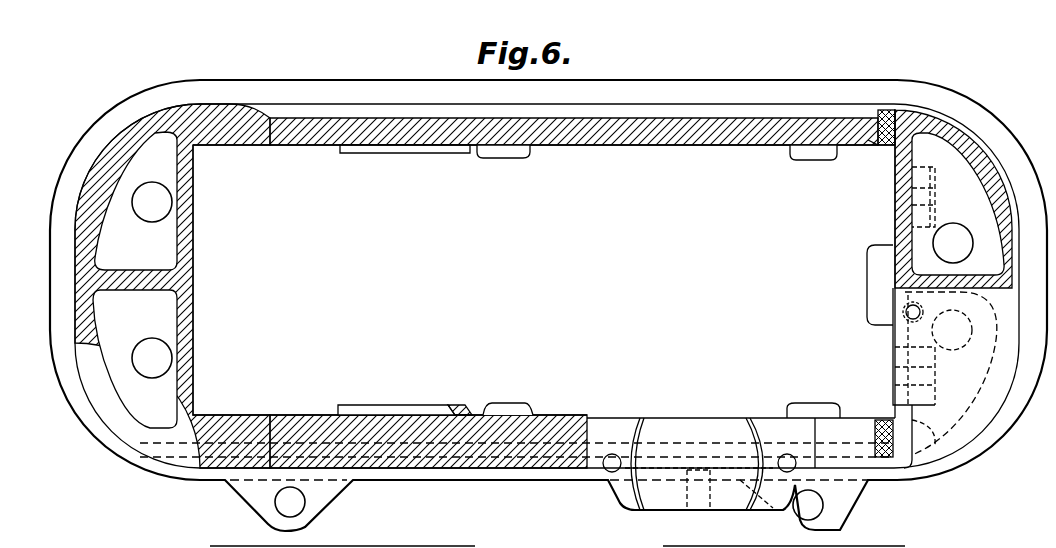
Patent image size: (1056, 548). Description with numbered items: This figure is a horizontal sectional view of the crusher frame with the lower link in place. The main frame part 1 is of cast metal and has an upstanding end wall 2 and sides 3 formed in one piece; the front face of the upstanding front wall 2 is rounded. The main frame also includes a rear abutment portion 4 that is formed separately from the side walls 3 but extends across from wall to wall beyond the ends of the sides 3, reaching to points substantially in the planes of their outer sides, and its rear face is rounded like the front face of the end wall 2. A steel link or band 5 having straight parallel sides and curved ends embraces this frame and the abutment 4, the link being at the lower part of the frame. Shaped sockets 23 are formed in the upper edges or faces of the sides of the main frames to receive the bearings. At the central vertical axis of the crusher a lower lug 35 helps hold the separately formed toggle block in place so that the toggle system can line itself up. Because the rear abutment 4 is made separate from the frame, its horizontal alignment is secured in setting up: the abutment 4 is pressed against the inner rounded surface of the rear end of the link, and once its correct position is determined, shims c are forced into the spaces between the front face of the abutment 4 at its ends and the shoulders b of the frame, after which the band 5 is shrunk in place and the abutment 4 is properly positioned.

The main frame part 1 is at (201, 413).
The upstanding end wall 2 is at (188, 243).
The sides 3 is at (632, 146).
The rear abutment portion 4 is at (1003, 190).
The steel link or band 5 is at (302, 86).
The sockets 23 is at (683, 430).
The lower lug 35 is at (868, 305).
The shoulders b is at (850, 172).
The shims c is at (889, 110).